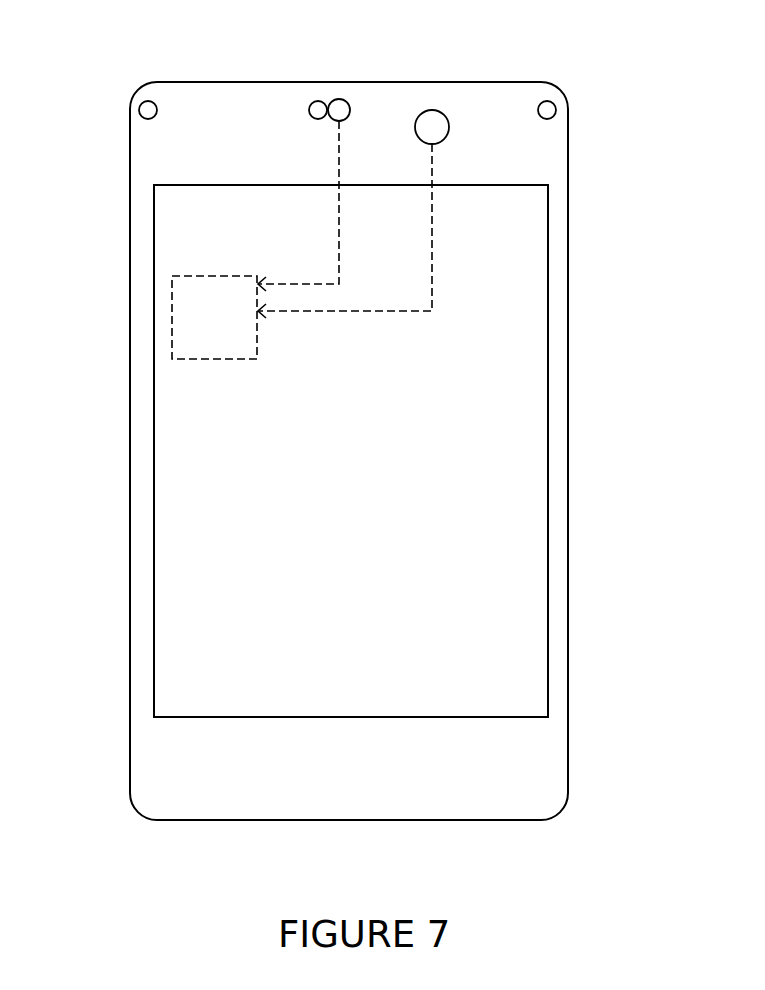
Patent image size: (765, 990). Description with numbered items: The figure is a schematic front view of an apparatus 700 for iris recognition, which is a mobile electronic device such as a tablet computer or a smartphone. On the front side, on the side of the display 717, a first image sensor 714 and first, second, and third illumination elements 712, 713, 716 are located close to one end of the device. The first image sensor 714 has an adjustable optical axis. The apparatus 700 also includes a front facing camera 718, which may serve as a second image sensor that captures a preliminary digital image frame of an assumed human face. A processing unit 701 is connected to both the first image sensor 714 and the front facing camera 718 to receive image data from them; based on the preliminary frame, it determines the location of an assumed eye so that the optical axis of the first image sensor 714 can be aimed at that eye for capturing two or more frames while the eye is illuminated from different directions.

The apparatus 700 is at (130, 334).
The processing unit 701 is at (173, 318).
The first illumination element 712 is at (556, 110).
The second illumination element 713 is at (139, 110).
The first image sensor 714 is at (350, 109).
The third illumination element 716 is at (309, 111).
The display 717 is at (548, 333).
The front facing camera 718 is at (449, 127).